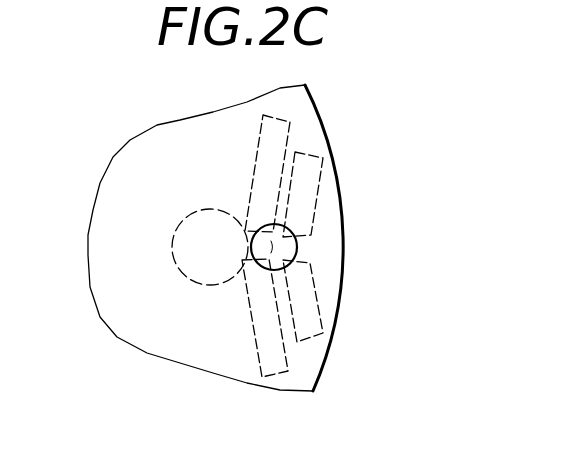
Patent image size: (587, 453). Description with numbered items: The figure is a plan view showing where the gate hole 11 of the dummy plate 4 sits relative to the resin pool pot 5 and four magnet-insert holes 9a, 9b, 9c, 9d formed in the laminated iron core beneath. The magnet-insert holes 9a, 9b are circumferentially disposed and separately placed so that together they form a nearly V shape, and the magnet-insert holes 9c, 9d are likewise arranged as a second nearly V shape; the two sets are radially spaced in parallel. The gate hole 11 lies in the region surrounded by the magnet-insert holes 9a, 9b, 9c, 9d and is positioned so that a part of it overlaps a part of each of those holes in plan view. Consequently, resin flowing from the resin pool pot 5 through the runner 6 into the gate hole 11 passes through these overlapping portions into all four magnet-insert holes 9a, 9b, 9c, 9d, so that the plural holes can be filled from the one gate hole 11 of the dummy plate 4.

The dummy plate 4 is at (328, 278).
The resin pool pot 5 is at (183, 225).
The runner 6 is at (249, 236).
The magnet-insert hole 9a is at (287, 142).
The magnet-insert hole 9b is at (288, 362).
The magnet-insert hole 9c is at (320, 192).
The magnet-insert hole 9d is at (320, 307).
The gate hole 11 is at (297, 243).